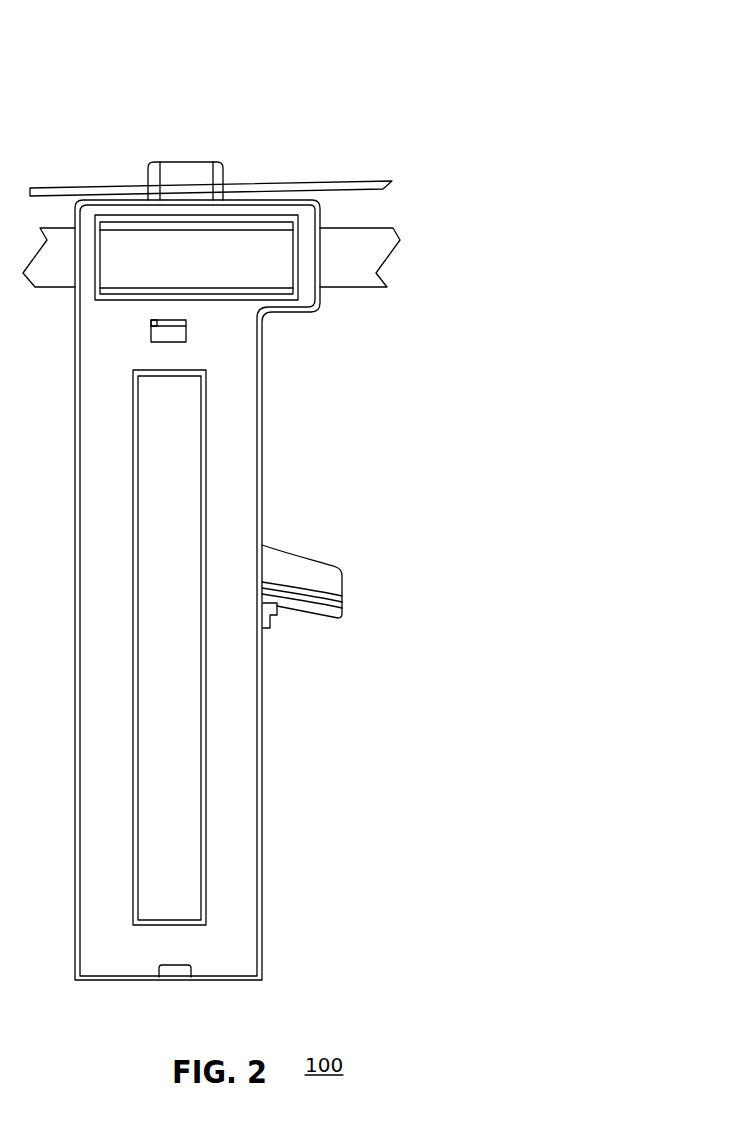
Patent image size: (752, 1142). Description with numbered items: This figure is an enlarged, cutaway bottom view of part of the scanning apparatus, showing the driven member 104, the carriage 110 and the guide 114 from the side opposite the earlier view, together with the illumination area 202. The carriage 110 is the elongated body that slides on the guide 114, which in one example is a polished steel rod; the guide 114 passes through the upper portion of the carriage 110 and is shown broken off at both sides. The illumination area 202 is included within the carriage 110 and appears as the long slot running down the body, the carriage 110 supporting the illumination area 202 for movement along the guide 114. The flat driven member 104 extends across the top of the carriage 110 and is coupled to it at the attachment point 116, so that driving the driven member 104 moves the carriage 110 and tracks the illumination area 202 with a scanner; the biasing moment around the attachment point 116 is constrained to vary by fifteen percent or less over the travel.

The driven member 104 is at (358, 180).
The carriage 110 is at (232, 805).
The guide 114 is at (348, 288).
The attachment point 116 is at (216, 186).
The illumination area 202 is at (173, 460).